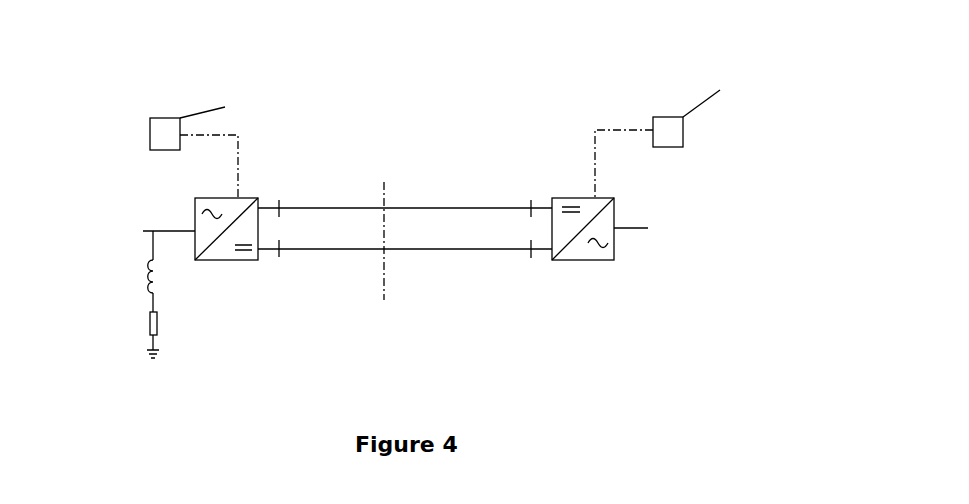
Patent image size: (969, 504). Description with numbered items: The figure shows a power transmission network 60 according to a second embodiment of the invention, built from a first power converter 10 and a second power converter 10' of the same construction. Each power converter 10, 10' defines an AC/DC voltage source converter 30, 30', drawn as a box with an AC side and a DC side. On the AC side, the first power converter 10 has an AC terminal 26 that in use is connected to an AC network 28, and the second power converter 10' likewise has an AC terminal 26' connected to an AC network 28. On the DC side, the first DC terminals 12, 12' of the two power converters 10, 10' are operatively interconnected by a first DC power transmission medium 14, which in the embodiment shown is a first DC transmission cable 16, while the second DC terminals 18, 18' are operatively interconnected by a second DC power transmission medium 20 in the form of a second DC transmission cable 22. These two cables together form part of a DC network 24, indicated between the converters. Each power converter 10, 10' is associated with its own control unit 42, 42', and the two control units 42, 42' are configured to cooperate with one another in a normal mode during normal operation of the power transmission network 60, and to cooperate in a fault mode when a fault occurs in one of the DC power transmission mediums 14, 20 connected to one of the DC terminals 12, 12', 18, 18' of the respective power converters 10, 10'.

The power transmission network 60 is at (303, 87).
The control unit 42 is at (207, 131).
The control unit 42' is at (698, 132).
The power converter 10 is at (249, 257).
The power converter 10' is at (569, 256).
The AC/DC voltage source converter 30 is at (249, 207).
The AC/DC voltage source converter 30' is at (569, 204).
The AC terminal 26 is at (155, 207).
The AC terminal 26' is at (651, 210).
The AC network 28 is at (134, 222).
The first DC power transmission medium 14 is at (405, 180).
The first DC transmission cable 16 is at (395, 208).
The second DC power transmission medium 20 is at (405, 274).
The second DC transmission cable 22 is at (407, 249).
The first DC terminal 12 is at (291, 195).
The first DC terminal 12' is at (516, 195).
The second DC terminal 18 is at (280, 277).
The second DC terminal 18' is at (535, 282).
The DC network 24 is at (355, 278).